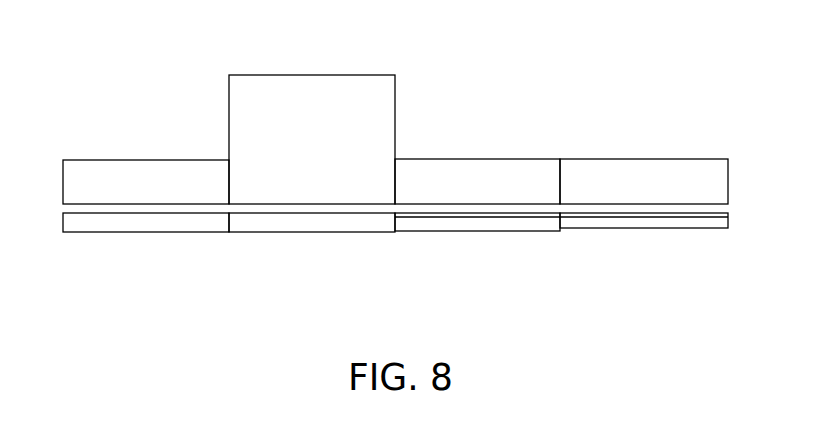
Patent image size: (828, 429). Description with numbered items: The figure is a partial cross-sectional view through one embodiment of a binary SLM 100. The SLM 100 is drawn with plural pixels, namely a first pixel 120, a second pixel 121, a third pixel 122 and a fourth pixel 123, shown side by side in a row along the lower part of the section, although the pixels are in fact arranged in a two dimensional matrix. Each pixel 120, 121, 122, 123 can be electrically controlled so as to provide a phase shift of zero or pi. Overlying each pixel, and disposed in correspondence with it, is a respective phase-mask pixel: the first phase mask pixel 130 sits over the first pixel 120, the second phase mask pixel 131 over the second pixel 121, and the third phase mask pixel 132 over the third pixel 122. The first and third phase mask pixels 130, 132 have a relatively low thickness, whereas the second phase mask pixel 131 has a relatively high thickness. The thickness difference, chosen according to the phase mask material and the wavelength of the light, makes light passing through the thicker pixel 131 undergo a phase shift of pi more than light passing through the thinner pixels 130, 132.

The binary SLM 100 is at (198, 294).
The first pixel 120 is at (145, 233).
The second pixel 121 is at (308, 233).
The third pixel 122 is at (481, 232).
The fourth pixel 123 is at (658, 229).
The first phase mask pixel 130 is at (140, 160).
The second phase mask pixel 131 is at (307, 75).
The third phase mask pixel 132 is at (473, 159).